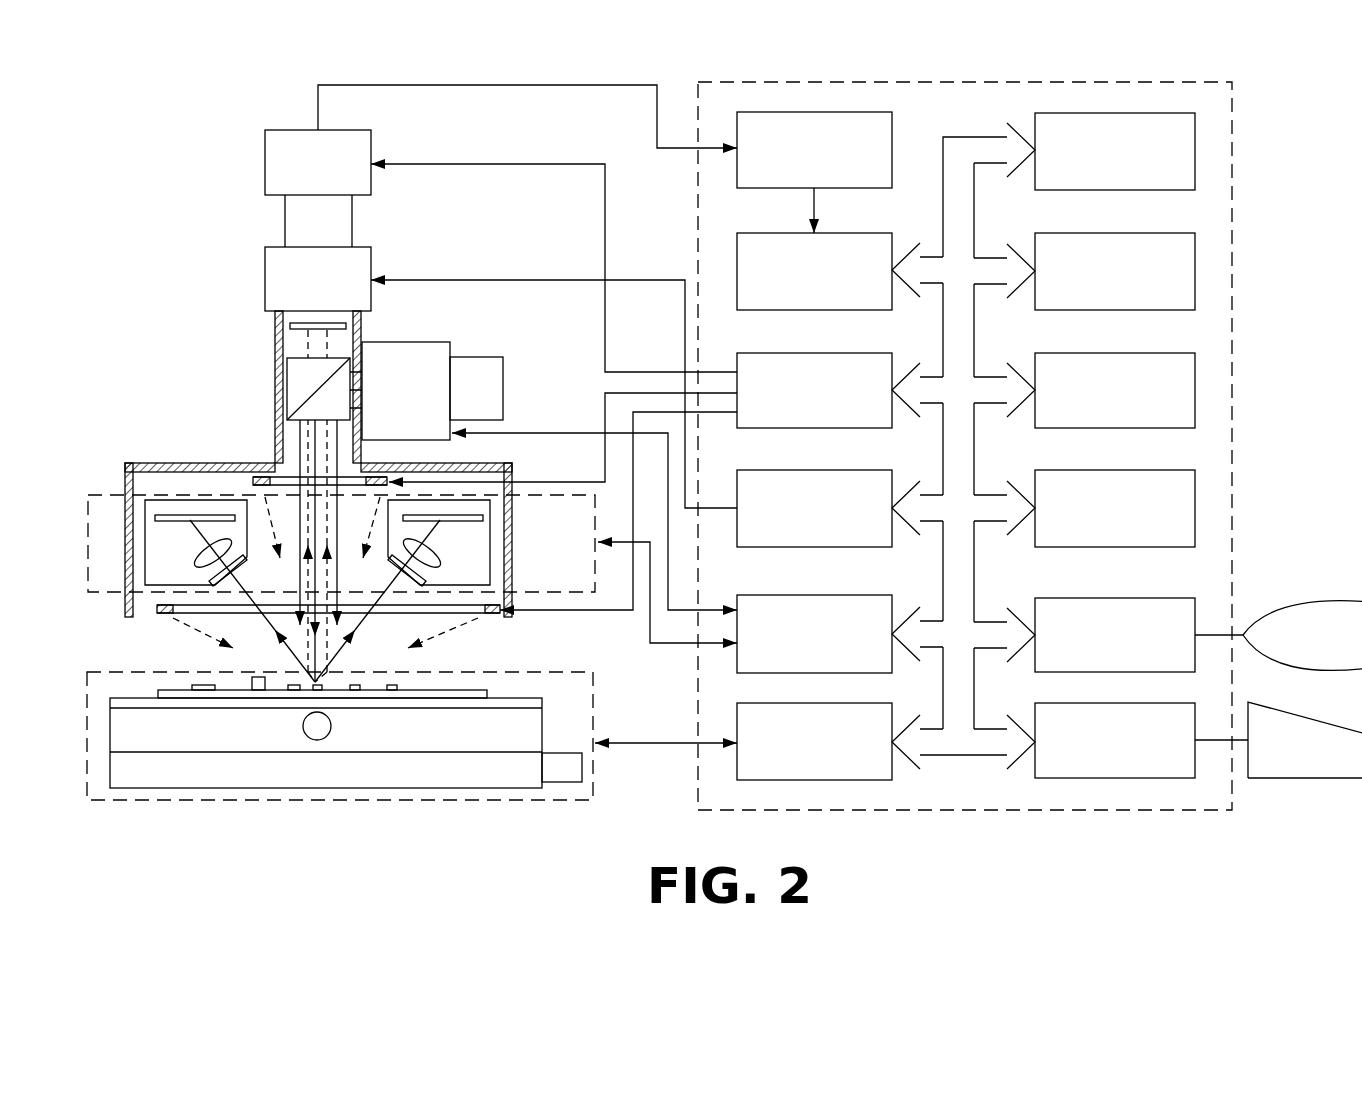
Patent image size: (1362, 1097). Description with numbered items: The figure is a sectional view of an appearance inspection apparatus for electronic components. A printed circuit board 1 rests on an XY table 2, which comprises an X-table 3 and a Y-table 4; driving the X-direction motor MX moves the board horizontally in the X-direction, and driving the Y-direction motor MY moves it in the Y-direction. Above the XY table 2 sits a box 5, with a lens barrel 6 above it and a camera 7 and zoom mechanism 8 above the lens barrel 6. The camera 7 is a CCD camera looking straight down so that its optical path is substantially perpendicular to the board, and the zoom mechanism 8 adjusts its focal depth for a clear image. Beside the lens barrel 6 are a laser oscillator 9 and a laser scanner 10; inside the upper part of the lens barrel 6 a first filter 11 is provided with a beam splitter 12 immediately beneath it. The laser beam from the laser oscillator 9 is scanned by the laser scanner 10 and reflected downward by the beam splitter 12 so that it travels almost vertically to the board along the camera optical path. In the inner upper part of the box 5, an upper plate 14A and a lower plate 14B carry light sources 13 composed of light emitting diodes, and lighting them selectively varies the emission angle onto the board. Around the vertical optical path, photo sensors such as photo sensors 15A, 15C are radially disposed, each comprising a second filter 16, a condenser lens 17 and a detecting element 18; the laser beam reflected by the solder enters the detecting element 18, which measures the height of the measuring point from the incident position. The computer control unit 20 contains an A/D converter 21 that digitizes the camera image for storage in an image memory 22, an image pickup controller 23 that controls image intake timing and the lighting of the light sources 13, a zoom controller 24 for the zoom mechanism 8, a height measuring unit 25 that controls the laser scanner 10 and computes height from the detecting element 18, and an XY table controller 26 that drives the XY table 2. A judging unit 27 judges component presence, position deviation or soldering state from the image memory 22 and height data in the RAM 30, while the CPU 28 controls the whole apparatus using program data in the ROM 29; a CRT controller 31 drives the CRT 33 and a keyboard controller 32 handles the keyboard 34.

The printed circuit board 1 is at (476, 690).
The XY table 2 is at (152, 801).
The X-table 3 is at (433, 773).
The Y-table 4 is at (197, 742).
The box 5 is at (181, 465).
The lens barrel 6 is at (275, 343).
The camera 7 is at (265, 158).
The zoom mechanism 8 is at (265, 275).
The laser oscillator 9 is at (485, 363).
The laser scanner 10 is at (394, 352).
The first filter 11 is at (290, 325).
The beam splitter 12 is at (294, 386).
The light source 13 is at (258, 488).
The upper plate 14A is at (258, 477).
The lower plate 14B is at (157, 610).
The photo sensor 15A is at (125, 527).
The photo sensor 15C is at (492, 576).
The second filter 16 is at (218, 583).
The condenser lens 17 is at (190, 551).
The detecting element 18 is at (165, 515).
The computer control unit 20 is at (943, 82).
The A/D converter 21 is at (808, 112).
The image memory 22 is at (835, 232).
The image pickup controller 23 is at (835, 352).
The zoom controller 24 is at (835, 470).
The height measuring unit 25 is at (835, 595).
The XY table controller 26 is at (815, 780).
The judging unit 27 is at (1195, 142).
The central processing unit 28 is at (1195, 275).
The read-only memory 29 is at (1195, 395).
The random access memory 30 is at (1195, 512).
The CRT controller 31 is at (1110, 598).
The keyboard controller 32 is at (1103, 778).
The cathode-ray tube 33 is at (1332, 601).
The computer keyboard 34 is at (1358, 780).
The X-direction motor MX is at (558, 773).
The Y-direction motor MY is at (315, 740).